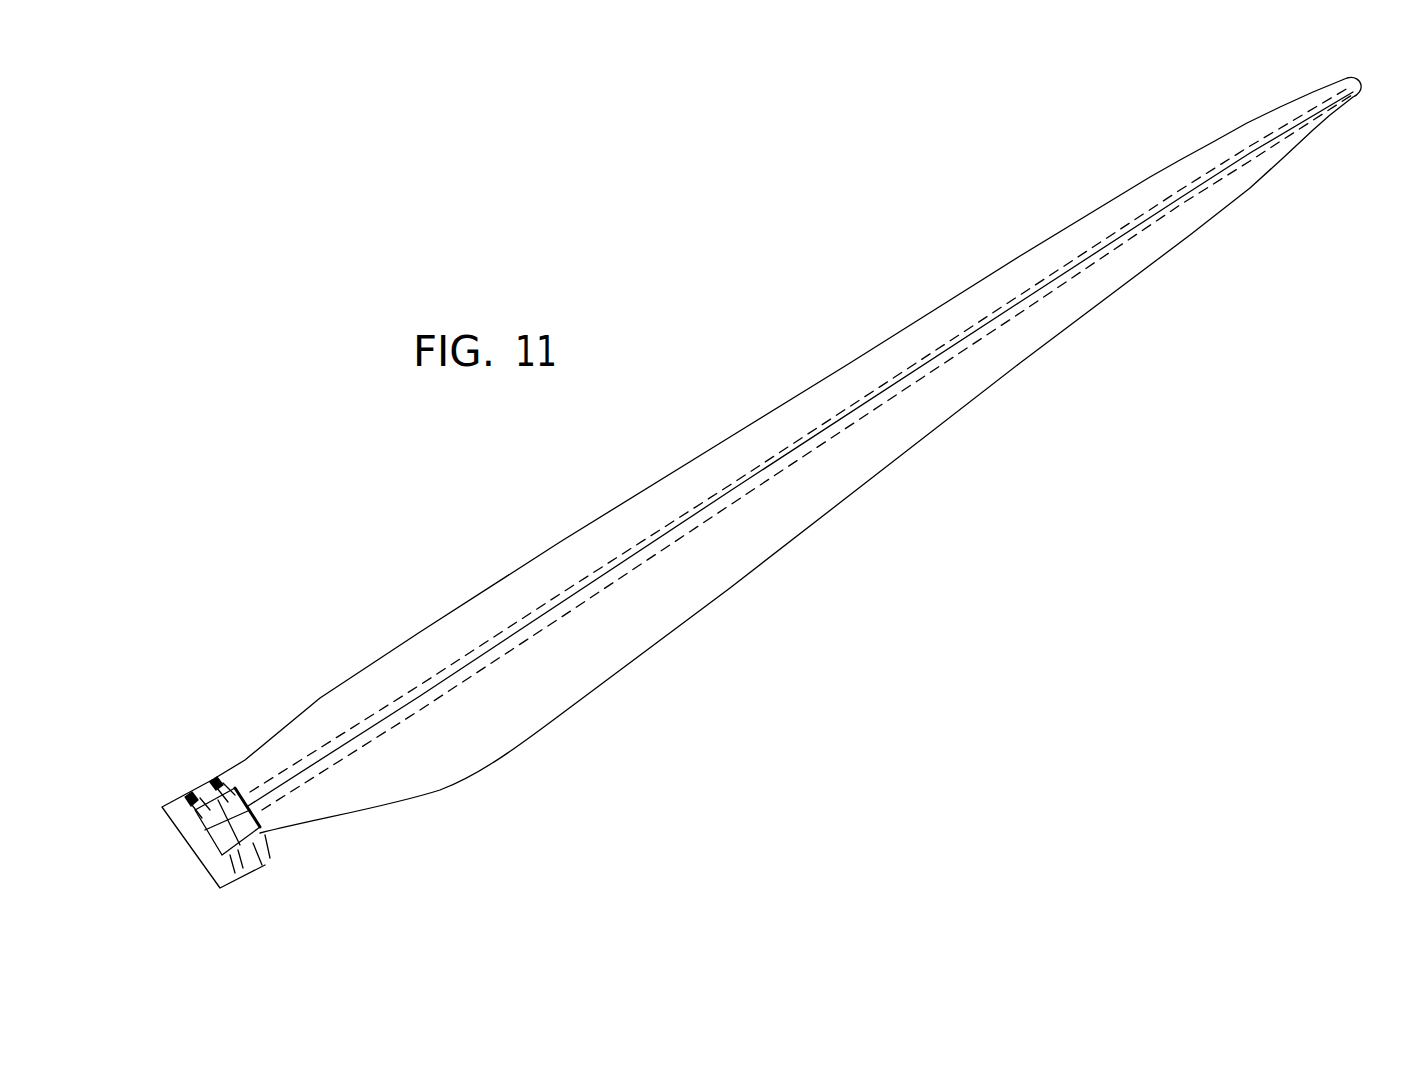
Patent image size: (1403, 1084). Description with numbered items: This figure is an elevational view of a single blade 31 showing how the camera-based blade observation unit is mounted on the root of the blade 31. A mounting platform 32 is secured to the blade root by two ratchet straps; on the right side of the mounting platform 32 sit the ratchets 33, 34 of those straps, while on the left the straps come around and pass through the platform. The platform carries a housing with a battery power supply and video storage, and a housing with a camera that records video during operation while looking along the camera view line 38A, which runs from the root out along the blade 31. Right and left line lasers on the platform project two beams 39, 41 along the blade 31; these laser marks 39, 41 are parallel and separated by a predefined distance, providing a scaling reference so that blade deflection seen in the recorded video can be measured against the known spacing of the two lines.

The blade 31 is at (855, 366).
The mounting platform 32 is at (260, 866).
The ratchet 33 is at (182, 797).
The ratchet 34 is at (212, 778).
The camera view line 38A is at (1008, 314).
The laser beam 39 is at (885, 383).
The laser beam 41 is at (783, 468).